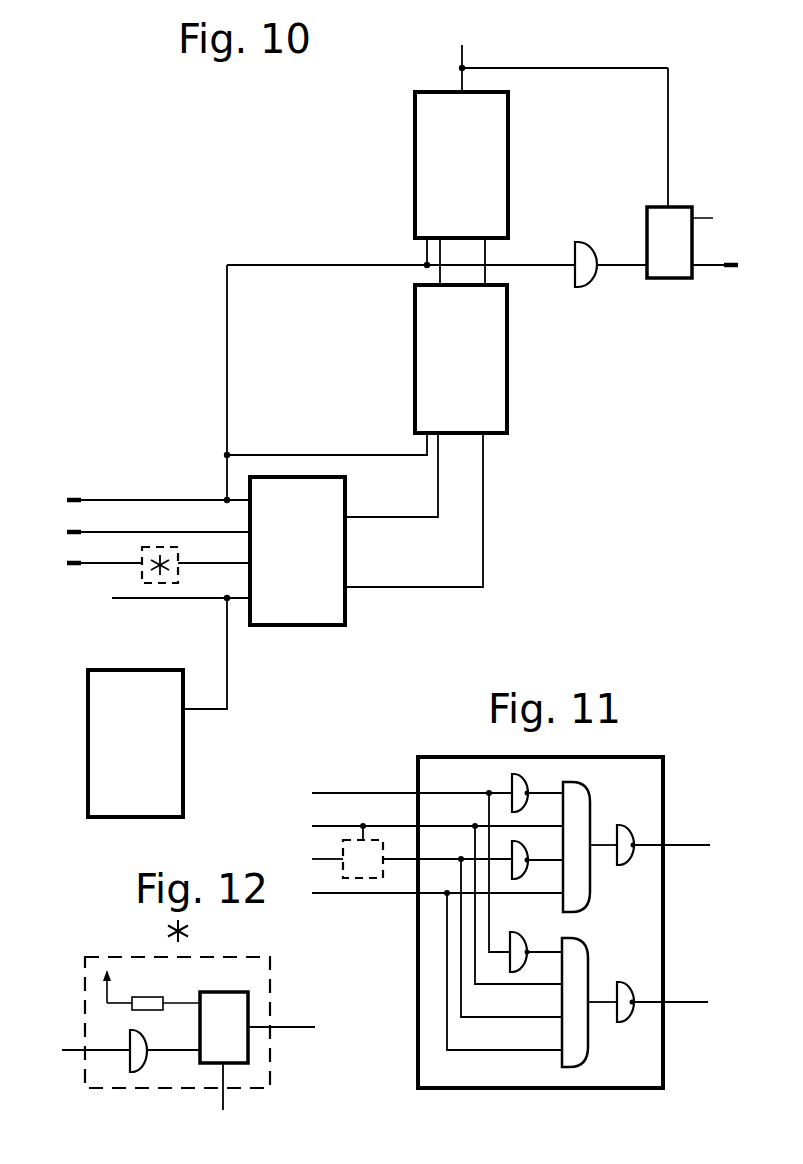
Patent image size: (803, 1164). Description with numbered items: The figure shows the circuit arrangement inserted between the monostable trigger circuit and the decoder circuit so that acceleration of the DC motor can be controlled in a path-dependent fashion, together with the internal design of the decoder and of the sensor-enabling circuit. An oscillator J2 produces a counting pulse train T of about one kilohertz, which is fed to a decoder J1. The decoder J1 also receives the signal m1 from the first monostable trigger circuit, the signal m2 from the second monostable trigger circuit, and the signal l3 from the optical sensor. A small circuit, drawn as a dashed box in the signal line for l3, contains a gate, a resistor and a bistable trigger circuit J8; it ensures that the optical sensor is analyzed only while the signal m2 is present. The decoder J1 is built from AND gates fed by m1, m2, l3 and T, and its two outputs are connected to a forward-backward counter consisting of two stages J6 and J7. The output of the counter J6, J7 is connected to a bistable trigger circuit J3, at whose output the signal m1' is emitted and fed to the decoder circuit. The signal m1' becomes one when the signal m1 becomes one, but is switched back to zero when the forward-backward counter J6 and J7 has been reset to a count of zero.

In FIG. 10, the decoder J1 is at (295, 625).
In FIG. 10, the oscillator J2 is at (135, 724).
In FIG. 10, the bistable trigger circuit J3 is at (642, 222).
In FIG. 10, the counter stage J6 is at (415, 350).
In FIG. 10, the counter stage J7 is at (415, 156).
In FIG. 12, the bistable trigger circuit J8 is at (233, 992).
In FIG. 10, the signal from monostable trigger circuit M1 m1 is at (140, 500).
In FIG. 11, the signal from monostable trigger circuit M1 m1 is at (396, 793).
In FIG. 10, the signal from monostable trigger circuit M2 m2 is at (140, 532).
In FIG. 11, the signal from monostable trigger circuit M2 m2 is at (421, 826).
In FIG. 12, the signal from monostable trigger circuit M2 m2 is at (227, 1103).
In FIG. 10, the signal from optical sensor L3 l3 is at (144, 565).
In FIG. 11, the signal from optical sensor L3 l3 is at (400, 859).
In FIG. 12, the signal from optical sensor L3 l3 is at (118, 1051).
In FIG. 10, the clock signal T is at (215, 654).
In FIG. 11, the clock signal T is at (427, 893).
In FIG. 10, the output signal m1' is at (731, 251).